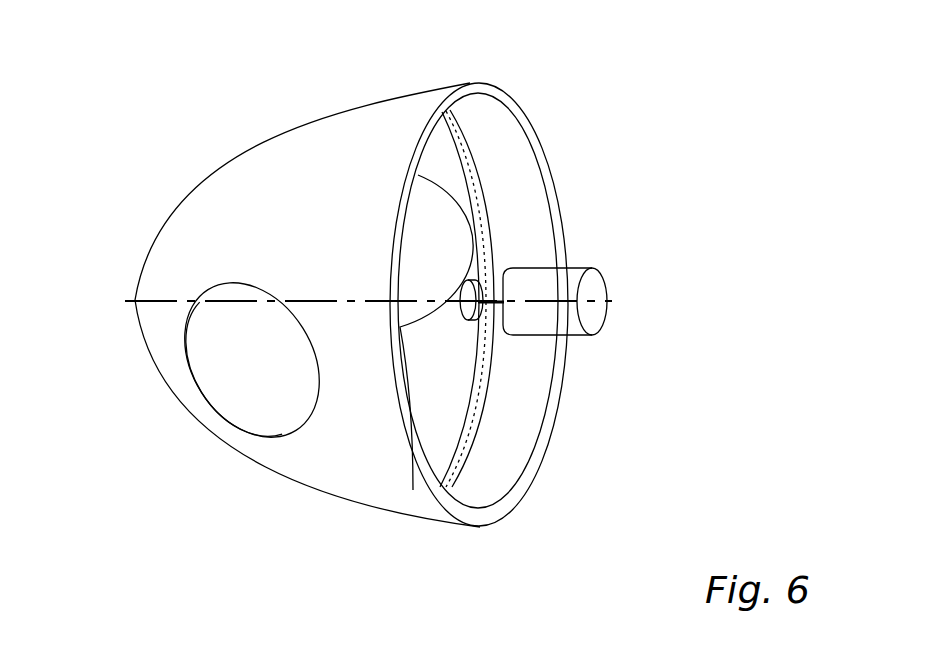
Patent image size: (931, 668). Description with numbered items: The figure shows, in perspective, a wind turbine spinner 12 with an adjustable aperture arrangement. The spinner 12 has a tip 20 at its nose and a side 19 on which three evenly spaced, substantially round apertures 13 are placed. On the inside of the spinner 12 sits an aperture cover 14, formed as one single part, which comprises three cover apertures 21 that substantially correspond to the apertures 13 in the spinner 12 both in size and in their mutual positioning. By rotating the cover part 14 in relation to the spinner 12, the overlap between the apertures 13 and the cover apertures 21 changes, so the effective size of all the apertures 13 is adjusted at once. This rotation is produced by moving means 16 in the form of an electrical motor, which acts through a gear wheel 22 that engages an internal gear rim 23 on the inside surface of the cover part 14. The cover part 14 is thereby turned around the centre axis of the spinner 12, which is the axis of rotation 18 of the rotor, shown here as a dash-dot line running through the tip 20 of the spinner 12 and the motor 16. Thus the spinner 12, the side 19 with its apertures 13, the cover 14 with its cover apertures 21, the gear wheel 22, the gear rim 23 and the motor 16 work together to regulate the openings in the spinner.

The wind turbine spinner 12 is at (530, 173).
The apertures 13 is at (238, 387).
The aperture cover 14 is at (463, 397).
The moving means 16 is at (597, 300).
The axis of rotation 18 is at (133, 300).
The side 19 is at (302, 213).
The tip 20 is at (151, 245).
The cover apertures 21 is at (433, 212).
The gear wheel 22 is at (413, 490).
The internal gear rim 23 is at (483, 233).